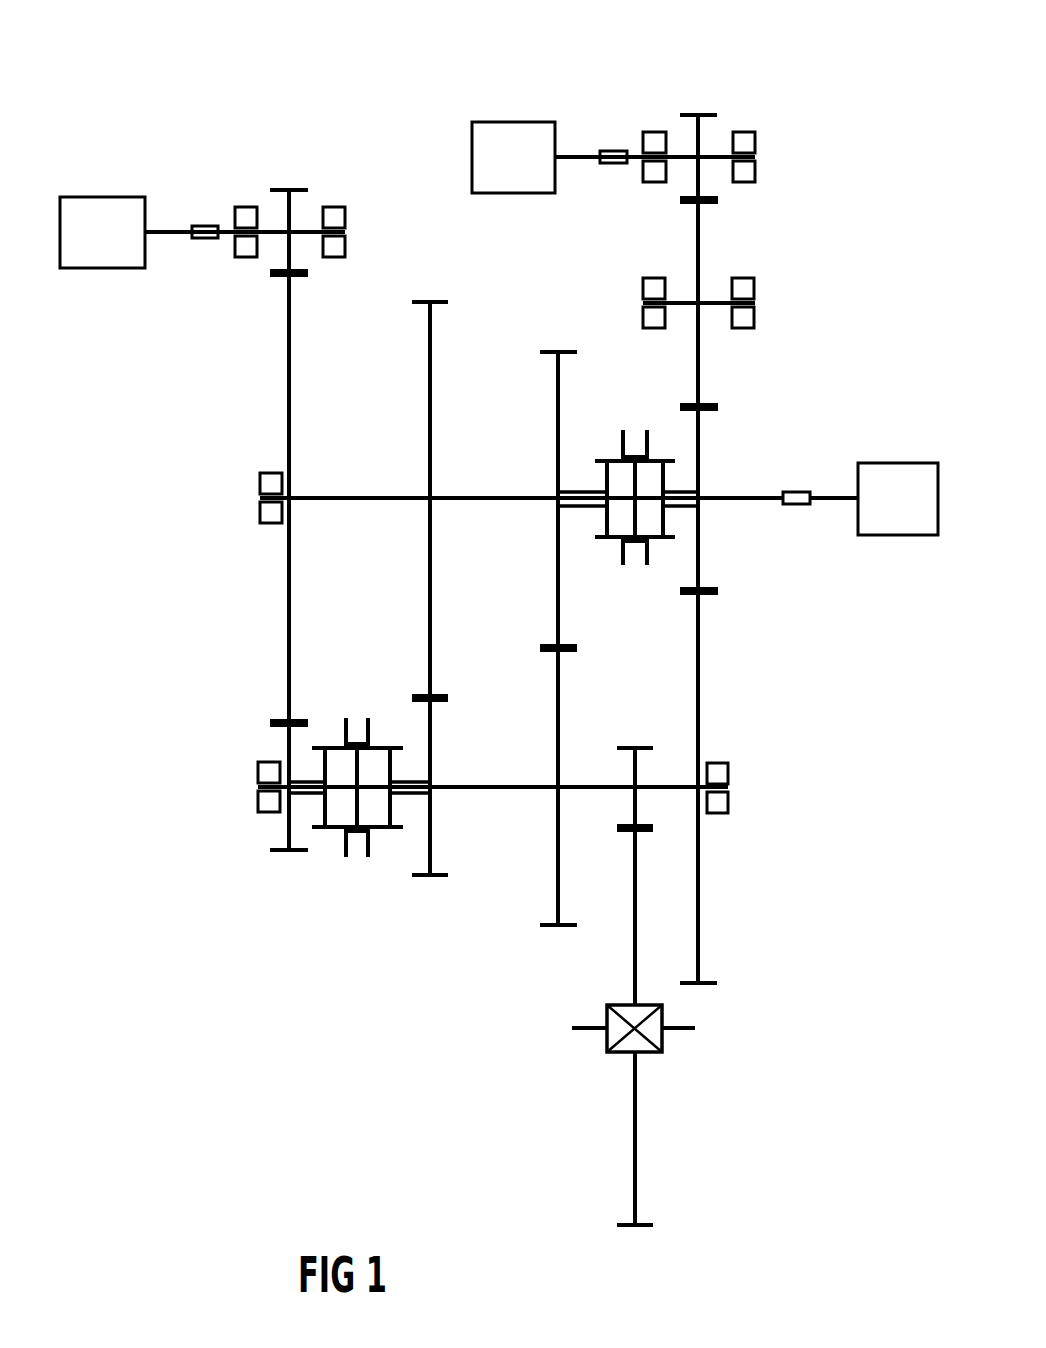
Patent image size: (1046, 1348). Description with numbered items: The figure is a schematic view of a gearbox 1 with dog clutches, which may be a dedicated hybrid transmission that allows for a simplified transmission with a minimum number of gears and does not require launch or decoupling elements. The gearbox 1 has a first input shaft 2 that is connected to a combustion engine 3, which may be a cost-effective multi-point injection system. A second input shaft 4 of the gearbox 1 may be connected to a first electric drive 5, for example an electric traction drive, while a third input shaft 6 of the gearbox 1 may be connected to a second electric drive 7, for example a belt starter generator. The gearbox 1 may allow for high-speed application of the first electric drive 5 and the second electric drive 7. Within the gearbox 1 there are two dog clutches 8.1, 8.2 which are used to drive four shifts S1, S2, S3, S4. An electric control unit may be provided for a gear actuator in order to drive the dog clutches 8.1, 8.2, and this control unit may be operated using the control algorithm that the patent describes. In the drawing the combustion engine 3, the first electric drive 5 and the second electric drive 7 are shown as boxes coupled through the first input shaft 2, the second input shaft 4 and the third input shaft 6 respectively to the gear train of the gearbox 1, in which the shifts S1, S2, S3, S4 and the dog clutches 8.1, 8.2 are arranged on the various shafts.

The gearbox 1 is at (312, 96).
The first input shaft 2 is at (770, 496).
The combustion engine 3 is at (908, 519).
The second input shaft 4 is at (615, 151).
The first electric drive 5 is at (523, 171).
The third input shaft 6 is at (207, 226).
The second electric drive 7 is at (113, 249).
The dog clutch 8.1 is at (635, 565).
The dog clutch 8.2 is at (357, 850).
The shift S1 is at (259, 733).
The shift S2 is at (426, 686).
The shift S3 is at (540, 632).
The shift S4 is at (726, 591).